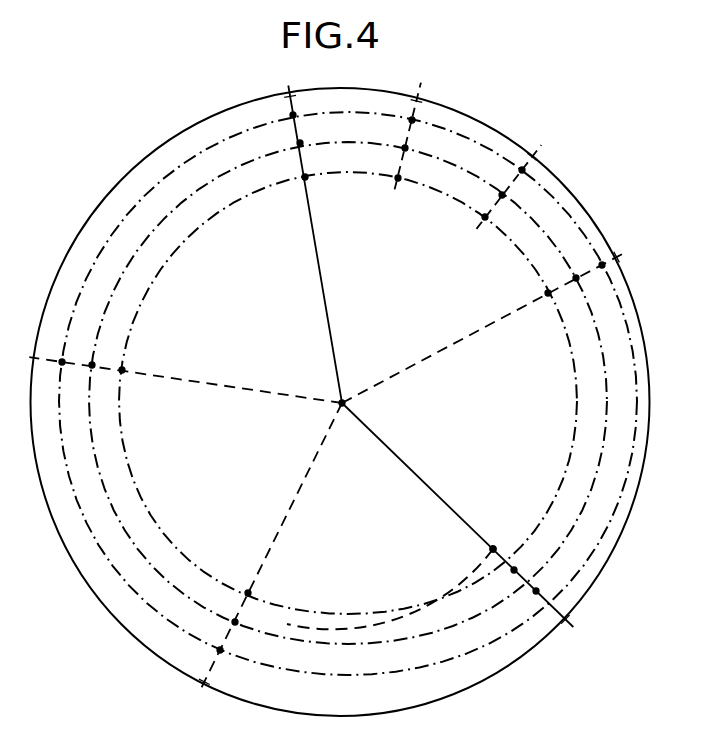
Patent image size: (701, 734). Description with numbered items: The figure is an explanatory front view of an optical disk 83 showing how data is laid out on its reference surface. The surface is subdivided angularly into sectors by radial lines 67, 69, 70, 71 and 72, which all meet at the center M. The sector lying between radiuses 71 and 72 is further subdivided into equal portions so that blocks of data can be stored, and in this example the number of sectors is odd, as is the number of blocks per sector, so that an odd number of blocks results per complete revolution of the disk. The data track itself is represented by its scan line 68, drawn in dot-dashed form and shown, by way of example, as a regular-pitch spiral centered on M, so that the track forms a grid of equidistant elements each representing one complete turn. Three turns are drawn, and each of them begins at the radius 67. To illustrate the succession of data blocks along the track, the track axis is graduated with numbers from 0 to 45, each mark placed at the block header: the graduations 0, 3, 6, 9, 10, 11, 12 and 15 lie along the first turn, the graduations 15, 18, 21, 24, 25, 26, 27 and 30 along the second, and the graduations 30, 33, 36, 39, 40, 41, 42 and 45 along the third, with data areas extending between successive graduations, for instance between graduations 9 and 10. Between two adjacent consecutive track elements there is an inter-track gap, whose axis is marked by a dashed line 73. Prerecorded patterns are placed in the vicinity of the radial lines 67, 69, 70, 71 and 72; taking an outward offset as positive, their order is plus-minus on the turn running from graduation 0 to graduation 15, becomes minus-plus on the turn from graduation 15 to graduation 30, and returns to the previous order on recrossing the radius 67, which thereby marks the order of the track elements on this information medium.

The graduation zero 0 is at (490, 536).
The graduation three 3 is at (255, 589).
The graduation six 6 is at (127, 384).
The graduation nine 9 is at (300, 191).
The graduation ten 10 is at (385, 190).
The graduation eleven 11 is at (471, 226).
The graduation twelve 12 is at (531, 296).
The graduation fifteen 15 is at (505, 546).
The graduation eighteen 18 is at (247, 616).
The graduation twenty-one 21 is at (100, 384).
The graduation twenty-four 24 is at (286, 163).
The graduation twenty-five 25 is at (390, 161).
The graduation twenty-six 26 is at (488, 199).
The graduation twenty-seven 27 is at (559, 273).
The graduation thirty 30 is at (528, 568).
The graduation thirty-three 33 is at (237, 646).
The graduation thirty-six 36 is at (70, 378).
The graduation thirty-nine 39 is at (283, 130).
The graduation forty 40 is at (399, 132).
The graduation forty-one 41 is at (509, 176).
The graduation forty-two 42 is at (589, 261).
The graduation forty-five 45 is at (552, 588).
The radial line 67 is at (435, 492).
The scan line 68 is at (438, 587).
The radial line 69 is at (285, 517).
The radial line 70 is at (247, 387).
The radial line 71 is at (327, 302).
The radial line 72 is at (467, 337).
The dashed line 73 is at (406, 620).
The optical disk 83 is at (598, 222).
The center M is at (345, 398).